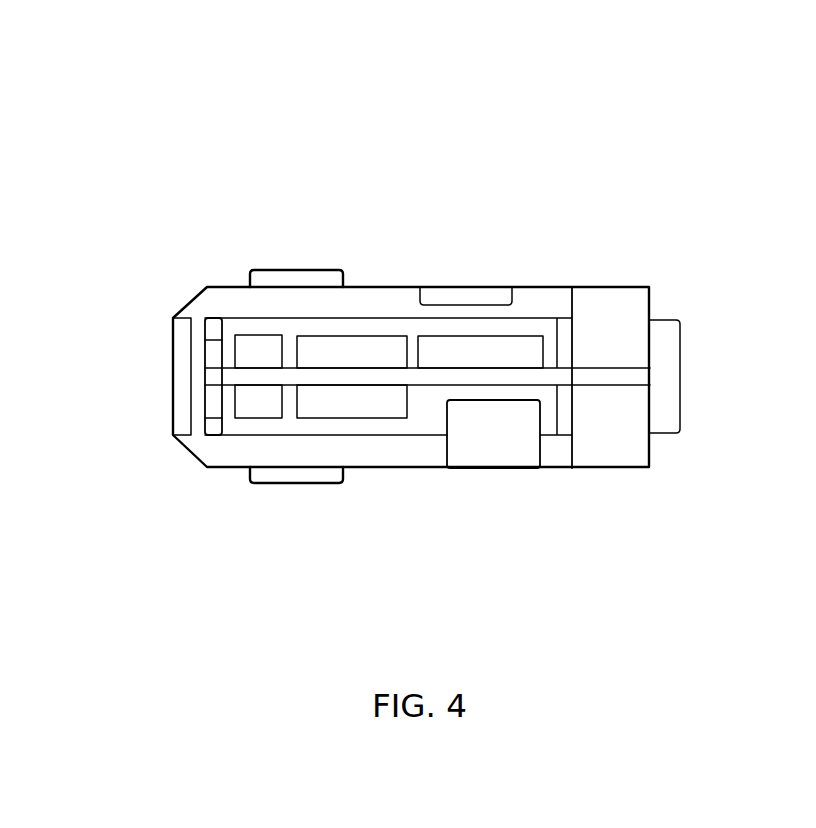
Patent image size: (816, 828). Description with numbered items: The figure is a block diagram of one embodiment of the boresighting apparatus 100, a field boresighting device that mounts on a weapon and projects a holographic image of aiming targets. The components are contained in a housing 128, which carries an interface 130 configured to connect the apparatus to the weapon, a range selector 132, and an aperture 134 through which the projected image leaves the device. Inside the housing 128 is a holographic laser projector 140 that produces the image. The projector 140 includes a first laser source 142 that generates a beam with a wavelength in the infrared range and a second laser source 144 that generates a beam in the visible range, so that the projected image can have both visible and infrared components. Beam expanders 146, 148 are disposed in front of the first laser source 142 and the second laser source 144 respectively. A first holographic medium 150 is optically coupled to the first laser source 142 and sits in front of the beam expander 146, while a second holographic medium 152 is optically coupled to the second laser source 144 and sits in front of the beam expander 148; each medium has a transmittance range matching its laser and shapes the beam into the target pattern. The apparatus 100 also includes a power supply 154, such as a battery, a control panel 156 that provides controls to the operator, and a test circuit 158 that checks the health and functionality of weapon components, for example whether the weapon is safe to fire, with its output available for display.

The boresighting apparatus 100 is at (339, 143).
The housing 128 is at (600, 295).
The interface 130 is at (259, 269).
The range selector 132 is at (577, 375).
The aperture 134 is at (172, 378).
The holographic laser projector 140 is at (253, 447).
The first laser source 142 is at (330, 352).
The second laser source 144 is at (330, 398).
The beam expander 146 is at (262, 353).
The beam expander 148 is at (258, 398).
The first holographic medium 150 is at (213, 351).
The second holographic medium 152 is at (213, 402).
The power supply 154 is at (495, 447).
The control panel 156 is at (450, 290).
The test circuit 158 is at (483, 352).